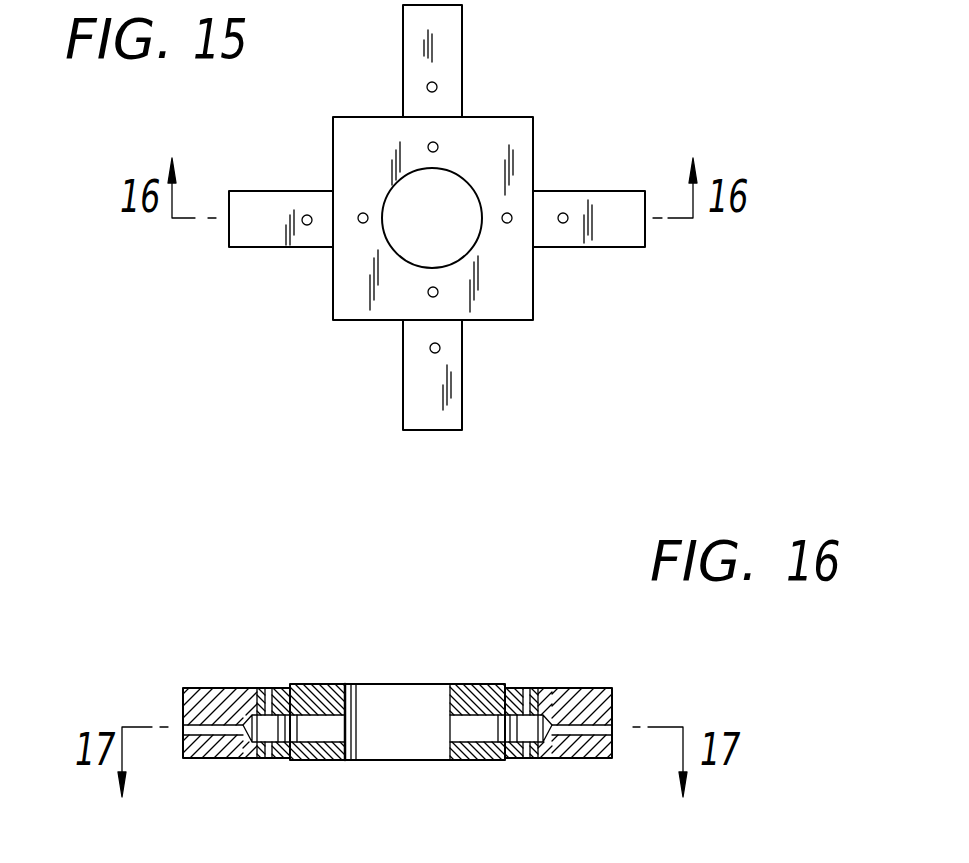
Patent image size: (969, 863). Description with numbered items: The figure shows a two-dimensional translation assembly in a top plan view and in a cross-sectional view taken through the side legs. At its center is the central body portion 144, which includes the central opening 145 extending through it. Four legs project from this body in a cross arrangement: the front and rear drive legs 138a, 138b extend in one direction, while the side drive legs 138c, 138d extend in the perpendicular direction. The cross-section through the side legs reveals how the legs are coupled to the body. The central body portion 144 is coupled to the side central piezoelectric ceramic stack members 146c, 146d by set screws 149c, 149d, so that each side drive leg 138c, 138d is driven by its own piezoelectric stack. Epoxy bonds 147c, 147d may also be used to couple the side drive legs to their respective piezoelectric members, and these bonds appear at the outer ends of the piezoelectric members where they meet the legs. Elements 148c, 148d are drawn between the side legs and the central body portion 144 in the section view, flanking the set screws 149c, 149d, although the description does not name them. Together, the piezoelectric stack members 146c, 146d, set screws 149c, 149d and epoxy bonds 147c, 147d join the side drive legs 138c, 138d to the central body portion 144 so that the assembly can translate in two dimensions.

In FIG. 15, the front drive leg 138a is at (416, 37).
In FIG. 15, the rear drive leg 138b is at (410, 383).
In FIG. 15, the side drive leg 138c is at (260, 205).
In FIG. 16, the side drive leg 138c is at (203, 688).
In FIG. 15, the side drive leg 138d is at (610, 198).
In FIG. 16, the side drive leg 138d is at (608, 687).
In FIG. 15, the central body portion 144 is at (528, 291).
In FIG. 16, the central body portion 144 is at (330, 686).
In FIG. 15, the central opening 145 is at (452, 188).
In FIG. 16, the central opening 145 is at (425, 692).
In FIG. 16, the side central piezoelectric ceramic stack member 146c is at (312, 742).
In FIG. 16, the side central piezoelectric ceramic stack member 146d is at (530, 733).
In FIG. 16, the epoxy bond 147c is at (245, 758).
In FIG. 16, the epoxy bond 147d is at (560, 757).
In FIG. 16, the bearing 148c is at (242, 688).
In FIG. 16, the bearing 148d is at (557, 687).
In FIG. 16, the set screw 149c is at (312, 688).
In FIG. 16, the set screw 149d is at (488, 686).